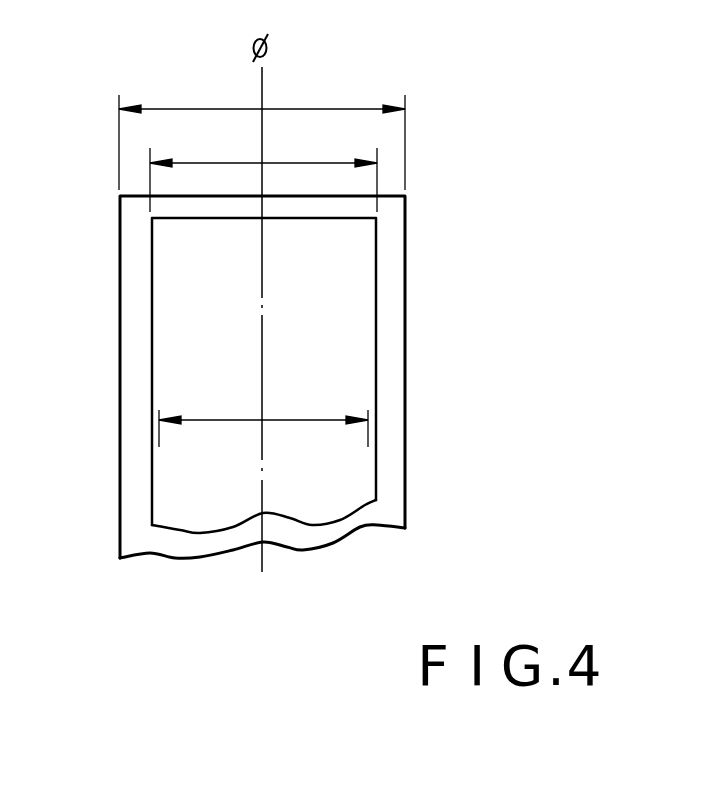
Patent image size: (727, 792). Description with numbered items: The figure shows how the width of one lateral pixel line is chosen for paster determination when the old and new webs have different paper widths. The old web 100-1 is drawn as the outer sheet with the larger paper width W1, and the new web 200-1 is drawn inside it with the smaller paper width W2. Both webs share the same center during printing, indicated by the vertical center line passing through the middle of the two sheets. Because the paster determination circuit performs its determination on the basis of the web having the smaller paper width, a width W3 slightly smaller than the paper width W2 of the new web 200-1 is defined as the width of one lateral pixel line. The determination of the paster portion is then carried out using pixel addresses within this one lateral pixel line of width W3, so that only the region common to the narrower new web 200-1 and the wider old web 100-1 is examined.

The old web 100-1 is at (390, 258).
The new web 200-1 is at (352, 330).
The paper width of the old web W1 is at (262, 132).
The paper width of the new web W2 is at (263, 170).
The width of one lateral pixel line W3 is at (263, 416).